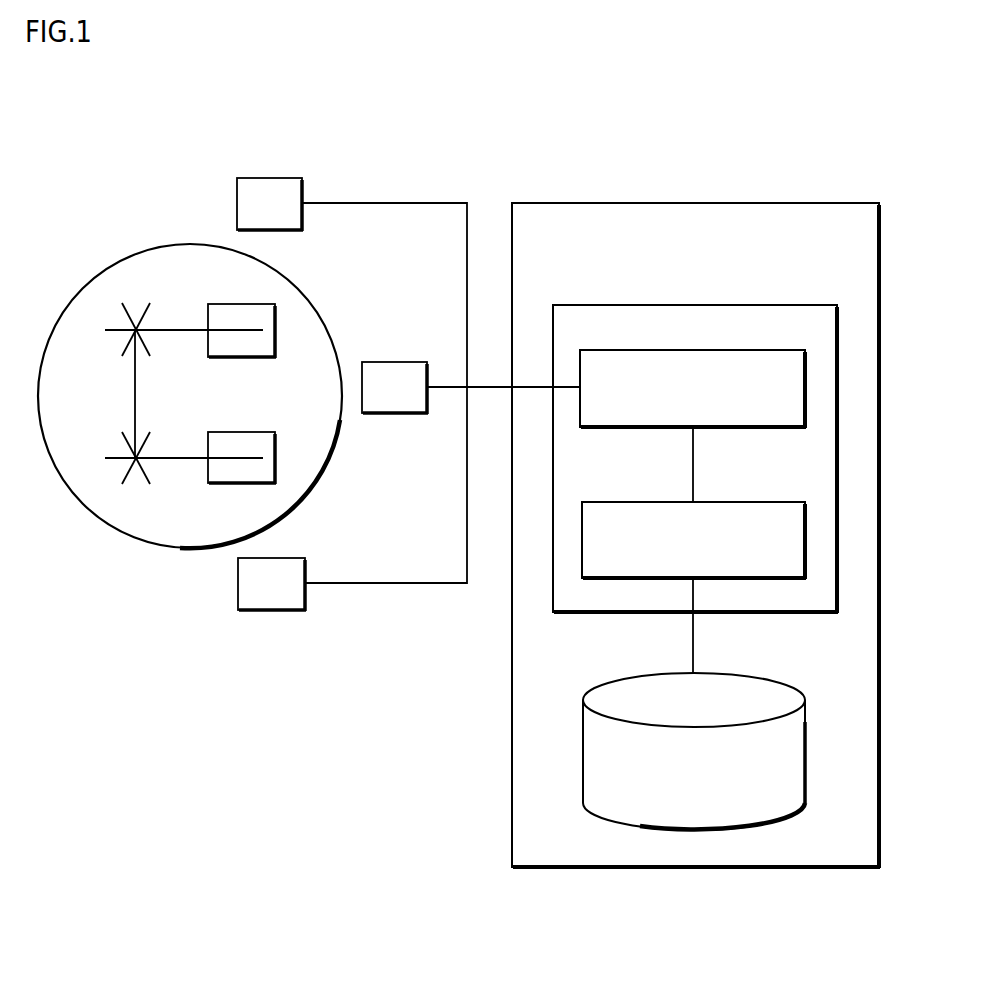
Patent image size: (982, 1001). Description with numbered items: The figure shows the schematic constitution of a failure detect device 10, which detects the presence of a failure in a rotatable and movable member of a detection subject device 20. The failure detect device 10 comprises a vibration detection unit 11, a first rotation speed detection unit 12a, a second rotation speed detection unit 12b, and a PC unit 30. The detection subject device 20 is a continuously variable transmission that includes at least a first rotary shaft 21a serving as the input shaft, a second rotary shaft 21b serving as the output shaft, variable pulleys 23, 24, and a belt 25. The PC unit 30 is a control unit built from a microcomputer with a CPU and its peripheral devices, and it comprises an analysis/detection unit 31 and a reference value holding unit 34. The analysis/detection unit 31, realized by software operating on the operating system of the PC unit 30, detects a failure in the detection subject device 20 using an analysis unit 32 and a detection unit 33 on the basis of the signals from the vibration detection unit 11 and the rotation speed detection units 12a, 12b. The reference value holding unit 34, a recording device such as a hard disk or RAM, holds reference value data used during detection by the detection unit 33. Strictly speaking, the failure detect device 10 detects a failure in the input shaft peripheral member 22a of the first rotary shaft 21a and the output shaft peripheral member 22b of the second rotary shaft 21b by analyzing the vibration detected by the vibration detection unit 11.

The failure detect device 10 is at (465, 158).
The vibration detection unit 11 is at (368, 377).
The first rotation speed detection unit 12a is at (248, 188).
The second rotation speed detection unit 12b is at (253, 592).
The detection subject device 20 is at (94, 538).
The first rotary shaft 21a is at (177, 332).
The second rotary shaft 21b is at (177, 457).
The input shaft peripheral member 22a is at (242, 343).
The output shaft peripheral member 22b is at (227, 472).
The variable pulley 23 is at (125, 310).
The variable pulley 24 is at (125, 473).
The belt 25 is at (135, 393).
The PC unit 30 is at (533, 220).
The analysis/detection unit 31 is at (571, 314).
The analysis unit 32 is at (590, 367).
The detection unit 33 is at (592, 524).
The reference value holding unit 34 is at (594, 694).